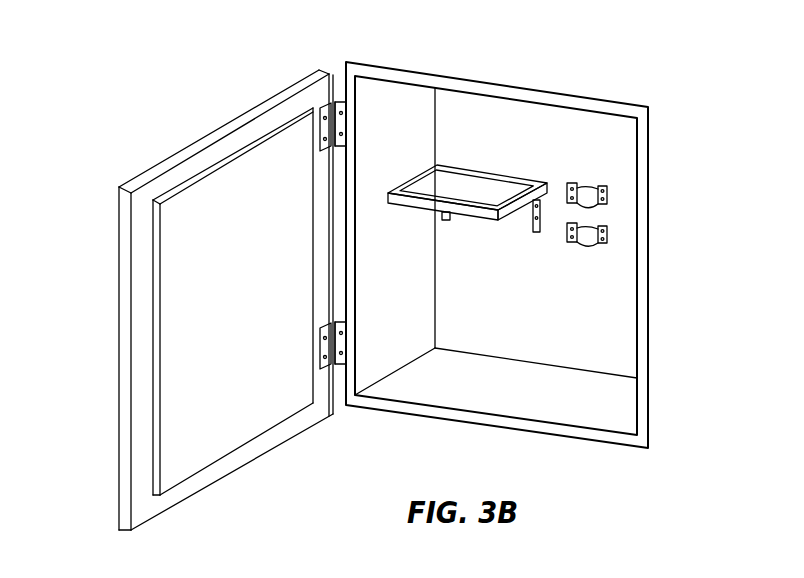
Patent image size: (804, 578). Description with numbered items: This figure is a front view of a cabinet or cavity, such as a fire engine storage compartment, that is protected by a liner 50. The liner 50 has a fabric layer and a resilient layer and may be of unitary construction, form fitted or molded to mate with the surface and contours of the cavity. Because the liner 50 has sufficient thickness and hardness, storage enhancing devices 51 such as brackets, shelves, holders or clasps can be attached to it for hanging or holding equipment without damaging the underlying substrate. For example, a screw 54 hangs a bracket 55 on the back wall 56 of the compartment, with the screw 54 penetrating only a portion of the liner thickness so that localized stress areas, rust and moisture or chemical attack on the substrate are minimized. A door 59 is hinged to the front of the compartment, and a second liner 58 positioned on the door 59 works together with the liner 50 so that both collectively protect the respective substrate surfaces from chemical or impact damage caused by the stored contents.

The liner 50 is at (650, 310).
The storage enhancing devices 51 is at (587, 248).
The screw 54 is at (524, 222).
The bracket 55 is at (533, 215).
The back wall 56 is at (490, 329).
The liner 58 is at (247, 425).
The door 59 is at (223, 467).